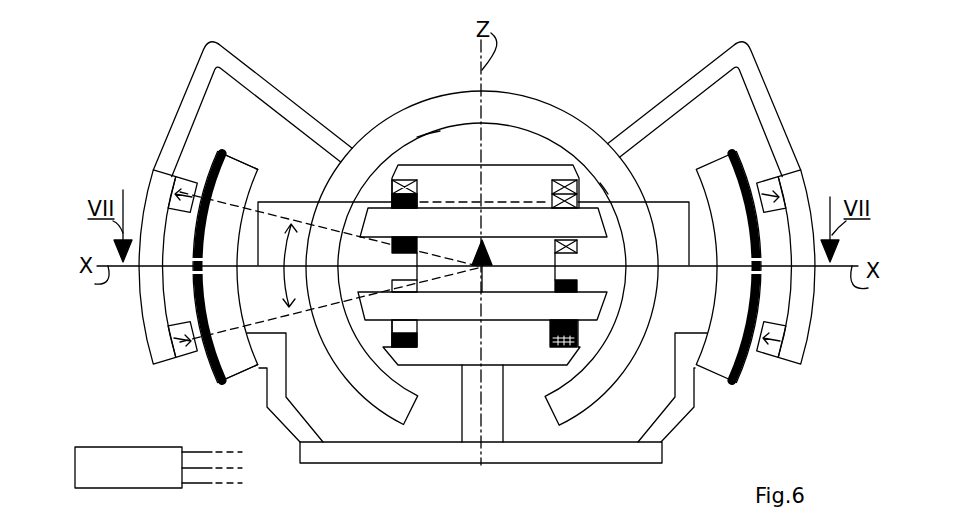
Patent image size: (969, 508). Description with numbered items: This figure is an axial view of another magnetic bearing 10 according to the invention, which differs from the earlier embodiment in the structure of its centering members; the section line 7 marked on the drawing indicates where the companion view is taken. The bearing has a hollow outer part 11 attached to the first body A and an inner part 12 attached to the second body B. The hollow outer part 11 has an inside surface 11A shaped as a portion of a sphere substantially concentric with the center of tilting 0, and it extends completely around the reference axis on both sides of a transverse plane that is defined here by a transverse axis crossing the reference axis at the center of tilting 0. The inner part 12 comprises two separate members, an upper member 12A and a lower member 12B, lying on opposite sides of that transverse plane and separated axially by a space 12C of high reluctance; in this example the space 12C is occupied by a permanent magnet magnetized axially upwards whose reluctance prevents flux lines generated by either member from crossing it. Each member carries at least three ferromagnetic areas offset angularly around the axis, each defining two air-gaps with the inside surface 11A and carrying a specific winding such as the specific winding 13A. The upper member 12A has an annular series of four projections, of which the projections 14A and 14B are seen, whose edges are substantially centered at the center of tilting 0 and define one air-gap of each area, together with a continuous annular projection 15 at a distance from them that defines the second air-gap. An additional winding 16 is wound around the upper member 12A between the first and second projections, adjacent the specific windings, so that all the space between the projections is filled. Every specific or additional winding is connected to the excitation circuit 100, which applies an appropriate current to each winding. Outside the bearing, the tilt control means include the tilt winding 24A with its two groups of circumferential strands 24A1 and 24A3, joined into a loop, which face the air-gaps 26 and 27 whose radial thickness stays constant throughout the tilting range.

The base 7 is at (484, 466).
The bearing 10 is at (626, 104).
The hollow outer part 11 is at (619, 378).
The inside surface 11A is at (417, 137).
The inner part 12 is at (442, 264).
The upper member 12A is at (507, 187).
The lower member 12B is at (510, 348).
The space 12C is at (556, 267).
The specific winding 13A is at (394, 279).
The projection 14A is at (362, 223).
The projection 14B is at (603, 220).
The continuous annular projection 15 is at (577, 190).
The additional winding 16 is at (600, 183).
The tilt winding 24A is at (200, 293).
The group of circumferential strands 24A1 is at (208, 165).
The group of circumferential strands 24A3 is at (214, 375).
The air-gap 26 is at (199, 185).
The air-gap 27 is at (195, 350).
The excitation circuit 100 is at (158, 467).
The center of tilting 0 is at (490, 268).
The first body A is at (273, 84).
The second body B is at (668, 456).